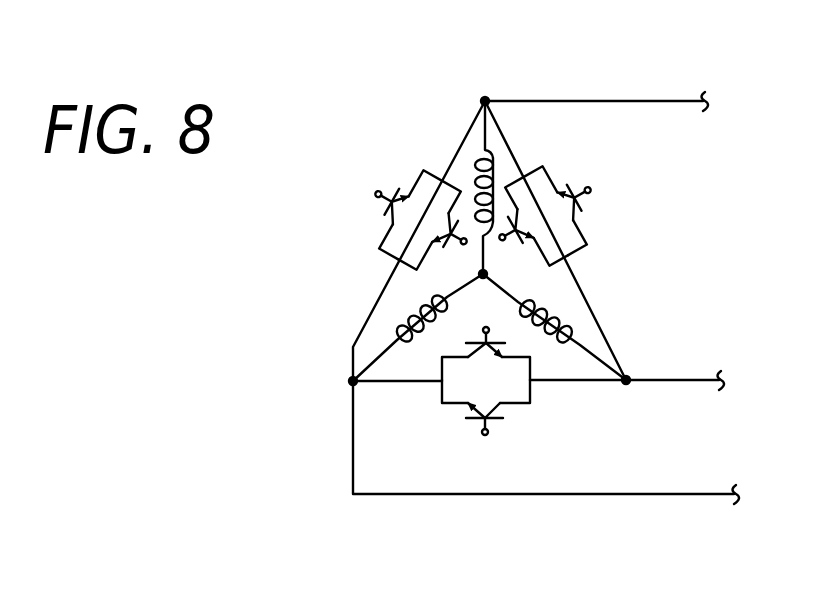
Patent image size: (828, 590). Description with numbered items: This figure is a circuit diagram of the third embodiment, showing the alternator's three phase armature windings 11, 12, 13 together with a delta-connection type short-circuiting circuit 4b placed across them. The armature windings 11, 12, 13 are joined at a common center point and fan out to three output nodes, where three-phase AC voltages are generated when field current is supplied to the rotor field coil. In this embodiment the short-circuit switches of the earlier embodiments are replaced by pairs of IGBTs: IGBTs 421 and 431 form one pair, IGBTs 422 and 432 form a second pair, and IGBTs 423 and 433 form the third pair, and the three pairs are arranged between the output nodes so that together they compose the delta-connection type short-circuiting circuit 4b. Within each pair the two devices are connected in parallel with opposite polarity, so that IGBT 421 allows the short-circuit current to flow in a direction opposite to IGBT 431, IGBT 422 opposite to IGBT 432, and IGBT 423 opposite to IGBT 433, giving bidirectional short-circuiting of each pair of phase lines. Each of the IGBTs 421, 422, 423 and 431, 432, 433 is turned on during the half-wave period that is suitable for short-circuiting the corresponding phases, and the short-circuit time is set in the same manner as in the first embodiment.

The Δ-connection type short-circuiting circuit 4b is at (459, 99).
The armature winding 11 is at (473, 165).
The armature winding 12 is at (570, 313).
The armature winding 13 is at (430, 337).
The IGBT 421 is at (585, 220).
The IGBT 422 is at (506, 406).
The IGBT 423 is at (383, 222).
The IGBT 431 is at (523, 230).
The IGBT 432 is at (483, 358).
The IGBT 433 is at (435, 232).